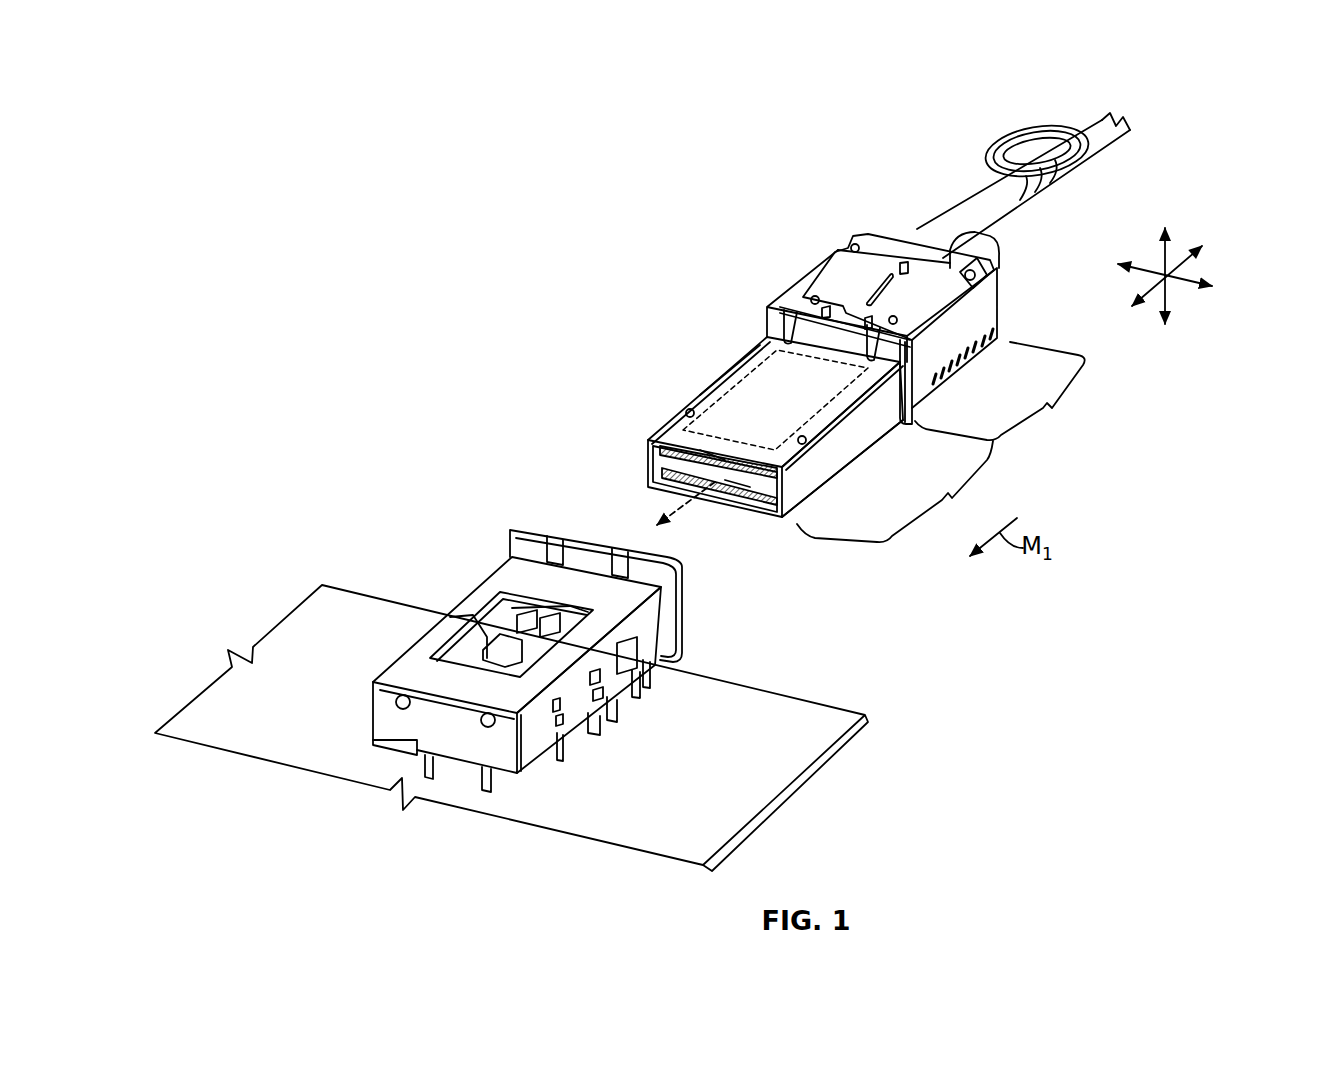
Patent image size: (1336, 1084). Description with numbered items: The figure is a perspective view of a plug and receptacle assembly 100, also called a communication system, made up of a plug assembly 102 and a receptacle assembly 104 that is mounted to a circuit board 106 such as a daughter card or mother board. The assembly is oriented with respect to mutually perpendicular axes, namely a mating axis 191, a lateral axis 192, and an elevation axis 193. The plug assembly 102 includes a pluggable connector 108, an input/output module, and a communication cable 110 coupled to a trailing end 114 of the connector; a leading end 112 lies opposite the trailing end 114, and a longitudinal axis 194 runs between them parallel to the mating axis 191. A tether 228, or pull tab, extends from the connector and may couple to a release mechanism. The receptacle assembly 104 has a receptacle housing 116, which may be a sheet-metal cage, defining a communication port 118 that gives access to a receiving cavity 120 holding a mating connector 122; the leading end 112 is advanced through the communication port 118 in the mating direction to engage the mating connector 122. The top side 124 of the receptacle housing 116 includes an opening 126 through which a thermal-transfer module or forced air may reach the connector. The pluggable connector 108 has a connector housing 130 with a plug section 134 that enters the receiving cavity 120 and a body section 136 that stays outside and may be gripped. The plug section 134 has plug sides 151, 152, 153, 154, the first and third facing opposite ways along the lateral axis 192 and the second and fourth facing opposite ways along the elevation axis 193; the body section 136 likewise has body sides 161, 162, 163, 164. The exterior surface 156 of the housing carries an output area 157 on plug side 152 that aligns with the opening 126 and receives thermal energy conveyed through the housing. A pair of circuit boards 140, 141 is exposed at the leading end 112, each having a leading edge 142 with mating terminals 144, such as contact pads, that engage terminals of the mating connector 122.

The plug and receptacle assembly 100 is at (442, 162).
The plug assembly 102 is at (875, 319).
The receptacle assembly 104 is at (543, 615).
The circuit board 106 is at (810, 722).
The pluggable connector 108 is at (742, 371).
The communication cable 110 is at (1097, 142).
The leading end 112 is at (647, 497).
The trailing end 114 is at (1018, 288).
The receptacle housing 116 is at (408, 685).
The communication port 118 is at (694, 590).
The receiving cavity 120 is at (456, 652).
The mating connector 122 is at (447, 663).
The top side 124 is at (526, 562).
The opening 126 is at (466, 632).
The connector housing 130 is at (828, 272).
The plug section 134 is at (895, 491).
The body section 136 is at (1005, 391).
The circuit board 140 is at (660, 453).
The circuit board 141 is at (663, 477).
The leading edge 142 is at (713, 457).
The mating terminals 144 is at (738, 467).
The plug side 151 is at (672, 400).
The plug side 152 is at (774, 394).
The plug side 153 is at (866, 418).
The plug side 154 is at (821, 498).
The exterior surface 156 is at (921, 296).
The output area 157 is at (798, 415).
The body side 161 is at (790, 256).
The body side 162 is at (855, 270).
The body side 163 is at (976, 347).
The body side 164 is at (911, 369).
The mating axis 191 is at (1190, 250).
The lateral axis 192 is at (1203, 272).
The elevation axis 193 is at (1182, 292).
The longitudinal axis 194 is at (680, 510).
The tether 228 is at (963, 217).